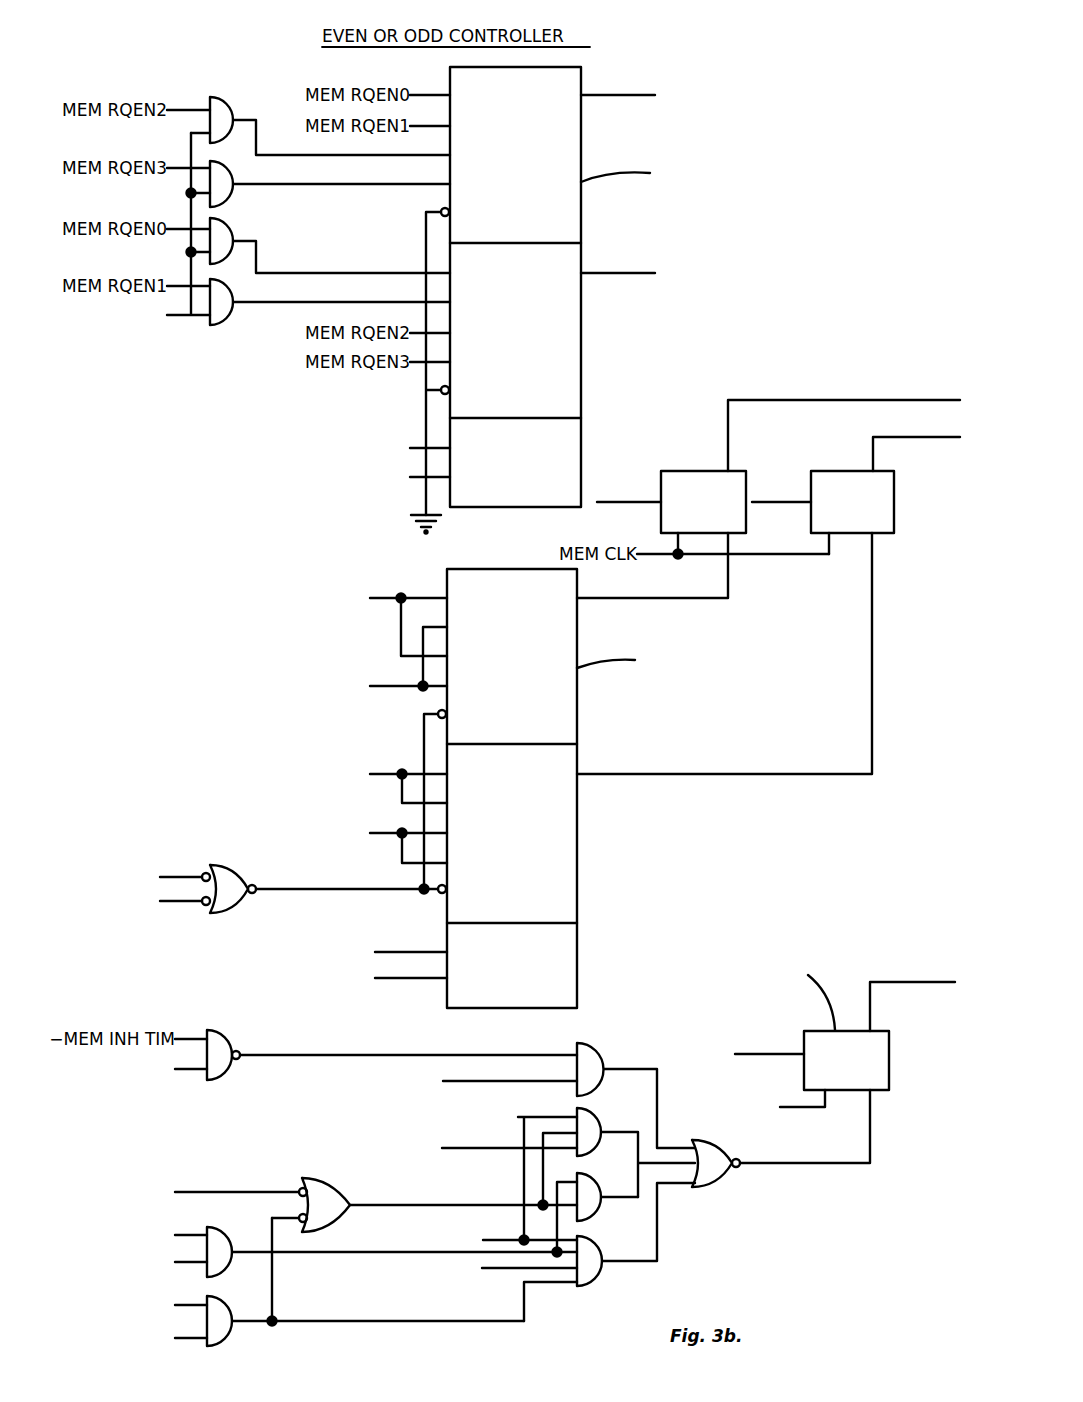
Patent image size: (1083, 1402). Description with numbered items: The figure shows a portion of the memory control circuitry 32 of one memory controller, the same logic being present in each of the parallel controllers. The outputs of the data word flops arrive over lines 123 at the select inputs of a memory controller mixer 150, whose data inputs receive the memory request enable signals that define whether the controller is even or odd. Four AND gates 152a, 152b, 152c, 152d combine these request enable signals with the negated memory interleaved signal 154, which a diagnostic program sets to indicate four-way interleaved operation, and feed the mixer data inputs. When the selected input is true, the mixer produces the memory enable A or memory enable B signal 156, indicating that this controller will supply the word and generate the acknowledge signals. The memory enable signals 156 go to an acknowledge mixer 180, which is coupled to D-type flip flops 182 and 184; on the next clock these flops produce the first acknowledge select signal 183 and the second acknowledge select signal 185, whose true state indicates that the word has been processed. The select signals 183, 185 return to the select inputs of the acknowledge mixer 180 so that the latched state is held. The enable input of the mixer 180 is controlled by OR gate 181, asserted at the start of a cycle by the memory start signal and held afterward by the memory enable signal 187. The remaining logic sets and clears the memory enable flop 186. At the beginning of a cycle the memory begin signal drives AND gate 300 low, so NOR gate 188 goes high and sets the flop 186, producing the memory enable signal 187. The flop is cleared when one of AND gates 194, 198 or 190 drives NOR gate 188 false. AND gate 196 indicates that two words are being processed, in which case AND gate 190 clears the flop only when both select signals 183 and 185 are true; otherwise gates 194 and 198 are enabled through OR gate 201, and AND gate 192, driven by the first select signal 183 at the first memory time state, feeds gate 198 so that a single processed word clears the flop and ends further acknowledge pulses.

The memory control circuitry 32 is at (168, 629).
The lines 123 is at (413, 476).
The memory controller mixer 150 is at (582, 355).
The AND gate 152a is at (215, 97).
The AND gate 152b is at (234, 194).
The AND gate 152c is at (234, 221).
The AND gate 152d is at (235, 298).
The -MEM INTERLEAVED signal 154 is at (191, 320).
The MEM EN A and MEM EN B signals 156 is at (612, 95).
The acknowledge mixer 180 is at (578, 722).
The OR gate 181 is at (218, 865).
The D-type flip flop 182 is at (690, 470).
The MEM 0/1 signal 183 is at (812, 397).
The D-type flip flop 184 is at (895, 510).
The MEM 2/3 signal 185 is at (870, 442).
The memory enable flop 186 is at (890, 1060).
The MEM EN signal 187 is at (184, 901).
The NOR gate 188 is at (725, 1183).
The AND gate 190 is at (590, 1240).
The AND gate 192 is at (221, 1229).
The AND gate 194 is at (593, 1110).
The AND gate 196 is at (233, 1340).
The AND gate 198 is at (588, 1175).
The NOR gate 201 is at (337, 1187).
The AND gate 300 is at (600, 1047).